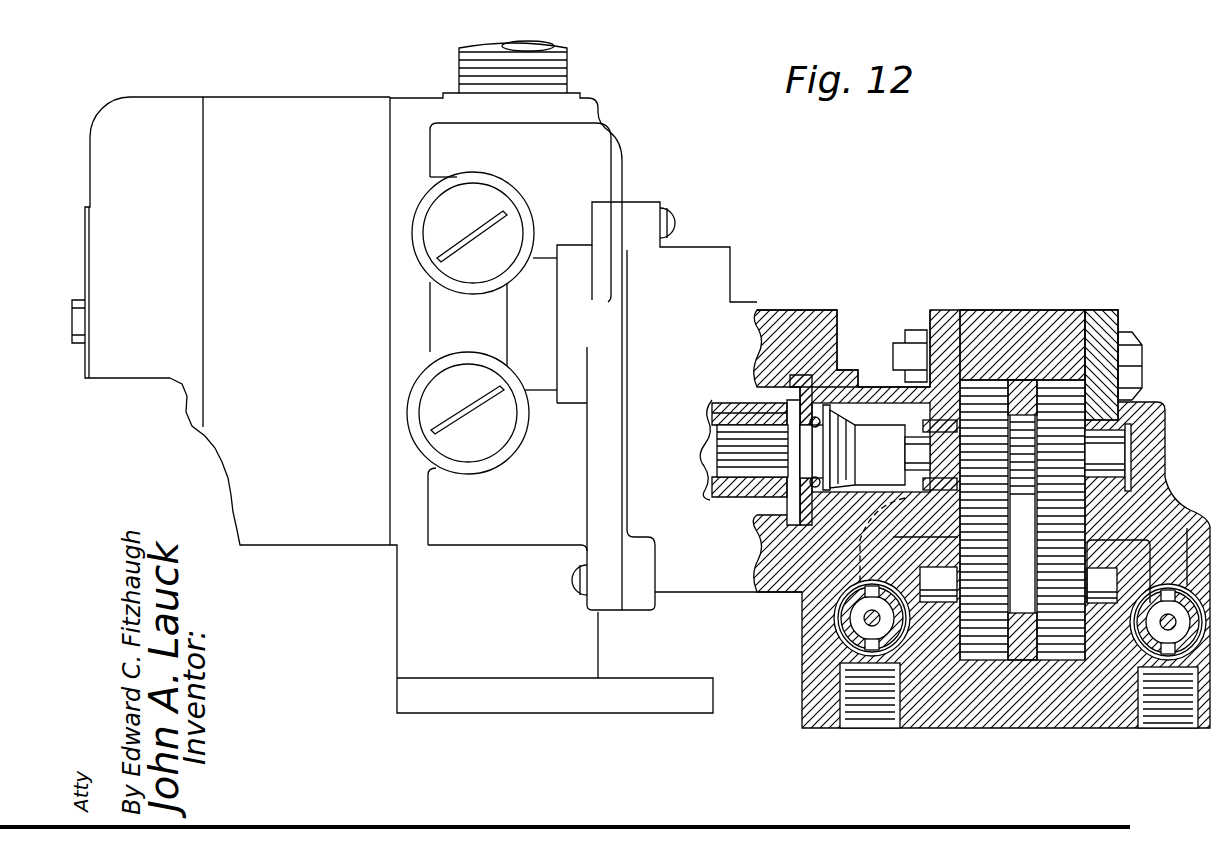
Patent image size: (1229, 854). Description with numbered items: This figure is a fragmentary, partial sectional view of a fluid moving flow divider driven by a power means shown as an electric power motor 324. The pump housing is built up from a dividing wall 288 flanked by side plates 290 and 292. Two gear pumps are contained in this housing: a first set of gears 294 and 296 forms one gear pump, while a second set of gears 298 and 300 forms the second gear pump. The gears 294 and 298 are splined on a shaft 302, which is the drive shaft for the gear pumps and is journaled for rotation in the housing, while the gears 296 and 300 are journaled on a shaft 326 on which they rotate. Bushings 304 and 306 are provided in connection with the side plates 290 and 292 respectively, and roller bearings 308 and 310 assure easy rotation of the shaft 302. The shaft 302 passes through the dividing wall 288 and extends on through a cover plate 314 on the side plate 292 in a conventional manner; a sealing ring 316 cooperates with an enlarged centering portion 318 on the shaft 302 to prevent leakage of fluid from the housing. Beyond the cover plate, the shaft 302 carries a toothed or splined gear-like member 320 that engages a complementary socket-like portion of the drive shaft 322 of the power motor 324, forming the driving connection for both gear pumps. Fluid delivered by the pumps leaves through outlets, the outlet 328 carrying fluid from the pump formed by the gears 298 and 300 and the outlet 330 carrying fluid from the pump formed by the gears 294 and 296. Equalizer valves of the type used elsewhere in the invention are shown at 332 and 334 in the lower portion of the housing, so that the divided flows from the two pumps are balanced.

The power motor 324 is at (290, 112).
The cover plate 314 is at (820, 318).
The side plate 292 is at (946, 318).
The dividing wall 288 is at (1017, 318).
The side plate 290 is at (1104, 320).
The gear 298 is at (1075, 396).
The sealing ring 316 is at (808, 386).
The gear 294 is at (893, 398).
The bushing 304 is at (1120, 424).
The drive shaft 322 is at (735, 403).
The enlarged centering portion 318 is at (864, 447).
The bushing 306 is at (907, 490).
The shaft 302 is at (1120, 448).
The roller bearing 308 is at (1131, 466).
The roller bearing 310 is at (935, 496).
The splined gear-like member 320 is at (750, 462).
The equalizer valve 334 is at (822, 636).
The outlet 330 is at (878, 716).
The gear 296 is at (980, 662).
The shaft 326 is at (1020, 615).
The gear 300 is at (1056, 662).
The equalizer valve 332 is at (1133, 661).
The outlet 328 is at (1182, 726).